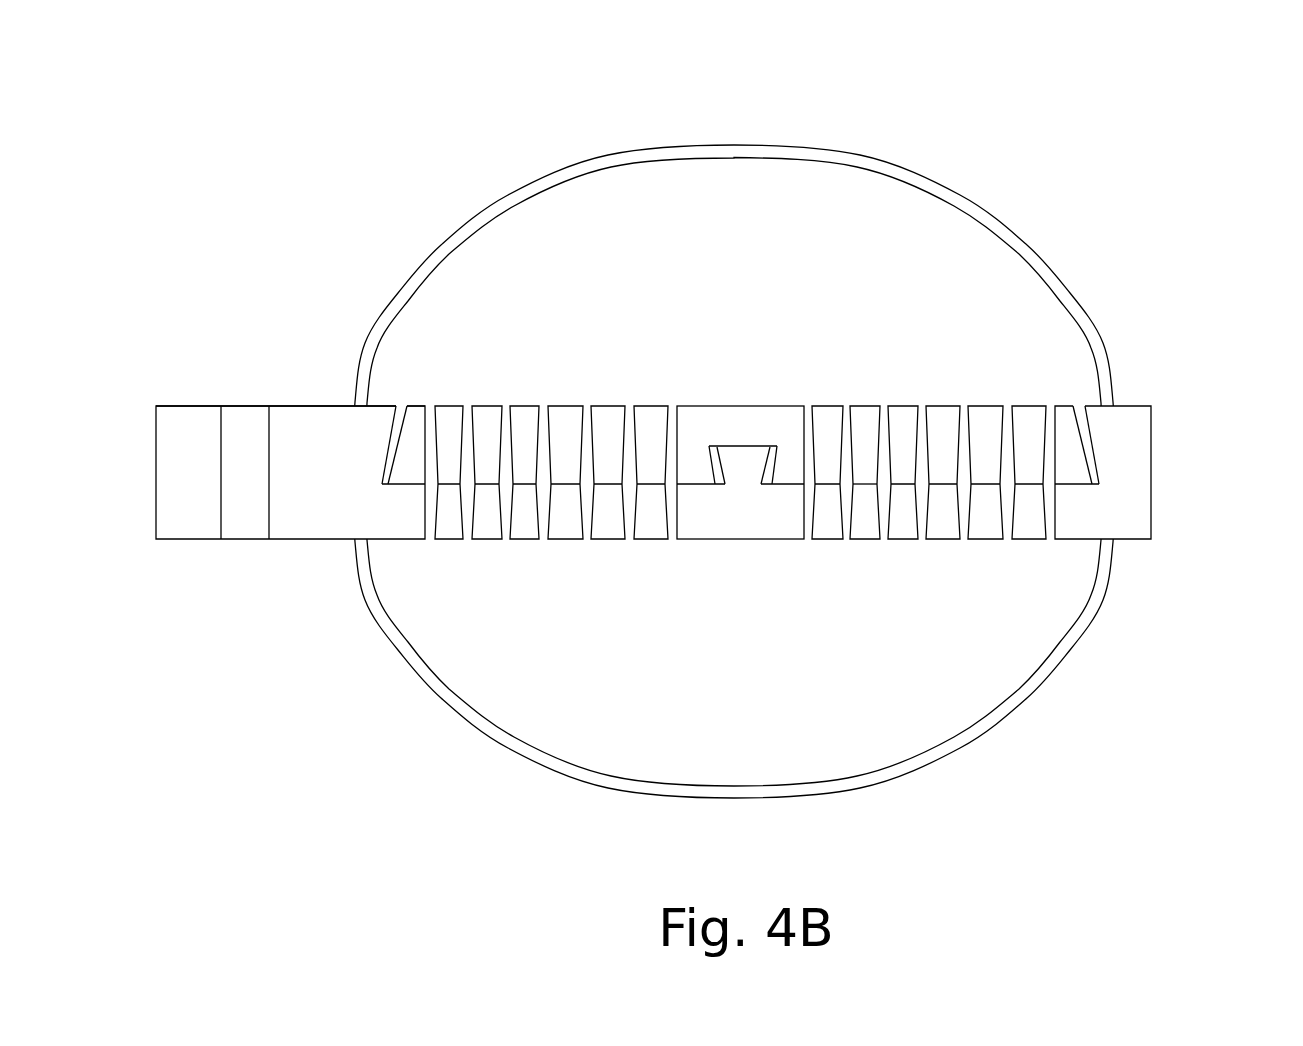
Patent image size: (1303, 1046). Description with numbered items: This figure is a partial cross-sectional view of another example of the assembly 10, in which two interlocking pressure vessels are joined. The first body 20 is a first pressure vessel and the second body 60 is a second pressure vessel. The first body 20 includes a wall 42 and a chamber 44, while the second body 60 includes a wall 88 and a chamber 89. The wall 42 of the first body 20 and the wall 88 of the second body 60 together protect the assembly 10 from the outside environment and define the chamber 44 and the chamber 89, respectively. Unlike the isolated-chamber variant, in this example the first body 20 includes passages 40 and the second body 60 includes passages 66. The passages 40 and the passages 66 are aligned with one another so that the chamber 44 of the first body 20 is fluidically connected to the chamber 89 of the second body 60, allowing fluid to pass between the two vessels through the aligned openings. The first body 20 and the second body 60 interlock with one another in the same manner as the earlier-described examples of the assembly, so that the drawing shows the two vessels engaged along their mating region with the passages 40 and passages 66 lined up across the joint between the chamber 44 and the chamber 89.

The assembly 10 is at (1100, 139).
The first body 20 is at (1060, 417).
The passages 40 is at (843, 413).
The wall 42 is at (492, 213).
The chamber 44 is at (717, 280).
The second body 60 is at (1132, 518).
The passages 66 is at (843, 532).
The wall 88 is at (508, 738).
The chamber 89 is at (675, 680).